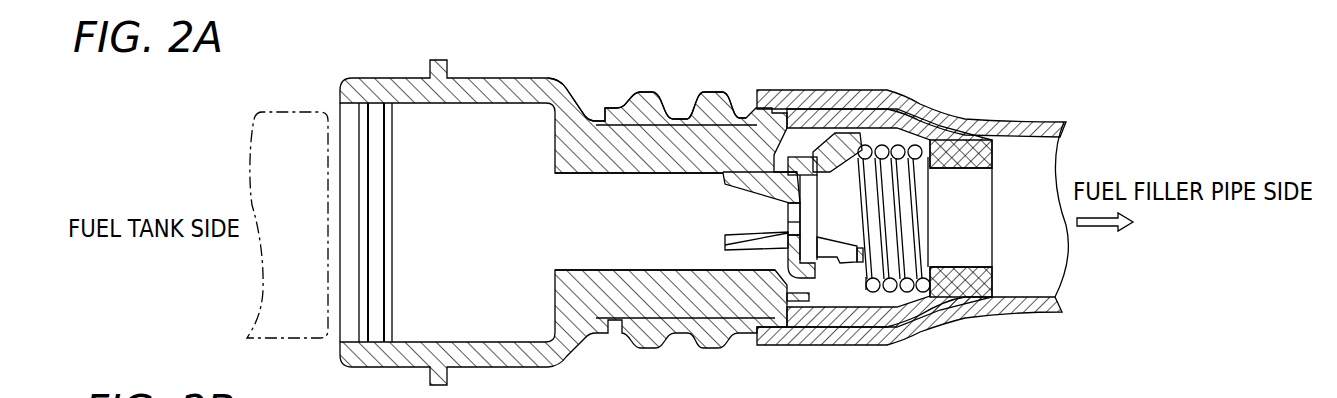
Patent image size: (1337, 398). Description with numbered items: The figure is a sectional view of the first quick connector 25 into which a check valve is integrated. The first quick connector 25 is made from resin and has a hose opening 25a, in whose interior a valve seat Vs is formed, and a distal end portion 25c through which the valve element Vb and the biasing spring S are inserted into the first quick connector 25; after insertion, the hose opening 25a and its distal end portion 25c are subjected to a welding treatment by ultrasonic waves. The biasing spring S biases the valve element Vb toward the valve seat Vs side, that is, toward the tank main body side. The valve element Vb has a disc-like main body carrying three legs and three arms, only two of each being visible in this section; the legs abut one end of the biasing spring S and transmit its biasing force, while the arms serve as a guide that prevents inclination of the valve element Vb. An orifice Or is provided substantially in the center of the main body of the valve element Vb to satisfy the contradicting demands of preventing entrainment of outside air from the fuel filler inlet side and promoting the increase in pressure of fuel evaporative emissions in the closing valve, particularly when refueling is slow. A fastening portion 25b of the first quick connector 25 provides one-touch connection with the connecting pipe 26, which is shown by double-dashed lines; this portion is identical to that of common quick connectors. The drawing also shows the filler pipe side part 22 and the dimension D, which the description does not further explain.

The fuel filler pipe 22 is at (940, 103).
The first quick connector 25 is at (601, 348).
The hose opening 25a is at (725, 145).
The fastening portion 25b is at (543, 78).
The distal end portion 25c is at (825, 118).
The connecting pipe 26 is at (283, 110).
The biasing spring S is at (925, 211).
The orifice Or is at (788, 208).
The valve element Vb is at (785, 217).
The valve seat Vs is at (773, 268).
The valve stroke D is at (859, 285).